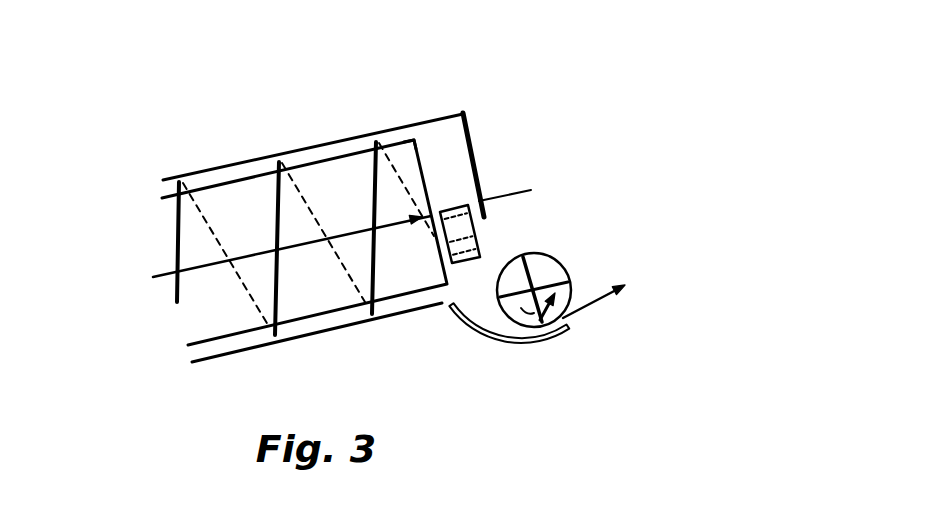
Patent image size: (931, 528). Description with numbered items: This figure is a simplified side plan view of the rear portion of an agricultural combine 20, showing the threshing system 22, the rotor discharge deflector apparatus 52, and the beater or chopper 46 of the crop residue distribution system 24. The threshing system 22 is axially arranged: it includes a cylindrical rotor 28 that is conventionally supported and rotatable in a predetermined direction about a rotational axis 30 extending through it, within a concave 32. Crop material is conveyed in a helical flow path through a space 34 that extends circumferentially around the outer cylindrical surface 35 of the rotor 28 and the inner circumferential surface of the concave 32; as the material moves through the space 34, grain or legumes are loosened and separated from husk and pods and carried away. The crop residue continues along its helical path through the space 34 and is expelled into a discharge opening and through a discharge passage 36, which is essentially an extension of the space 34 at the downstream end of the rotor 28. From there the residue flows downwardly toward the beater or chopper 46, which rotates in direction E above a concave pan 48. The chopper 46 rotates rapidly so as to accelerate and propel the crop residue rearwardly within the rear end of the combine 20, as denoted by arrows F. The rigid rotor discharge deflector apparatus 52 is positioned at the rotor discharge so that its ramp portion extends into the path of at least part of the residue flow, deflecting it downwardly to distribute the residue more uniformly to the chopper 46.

The agricultural combine 20 is at (560, 92).
The threshing system 22 is at (466, 112).
The crop residue distribution system 24 is at (580, 278).
The cylindrical rotor 28 is at (413, 138).
The rotational axis 30 is at (163, 273).
The concave 32 is at (203, 168).
The space 34 is at (313, 153).
The outer cylindrical surface 35 is at (249, 177).
The discharge passage 36 is at (453, 155).
The beater or chopper 46 is at (558, 268).
The concave pan 48 is at (487, 343).
The rotor discharge deflector apparatus 52 is at (480, 232).
The direction of rotation of the chopper E is at (557, 327).
The rearward flow of crop residue F is at (600, 302).